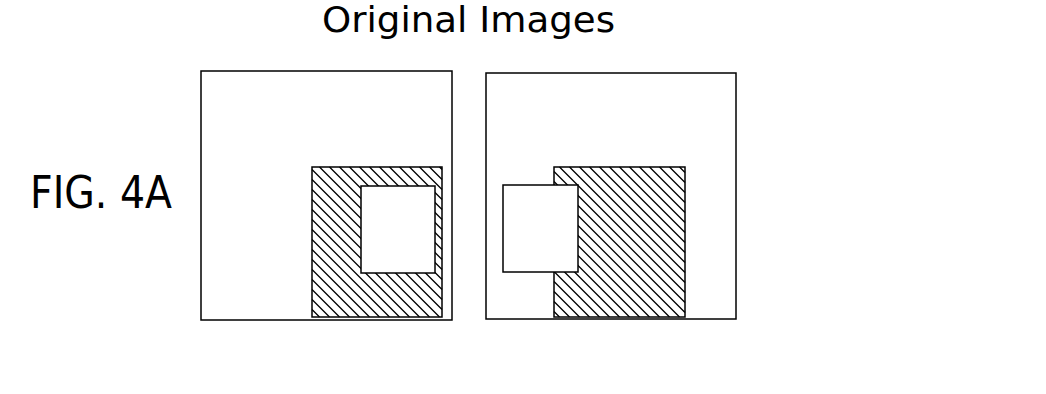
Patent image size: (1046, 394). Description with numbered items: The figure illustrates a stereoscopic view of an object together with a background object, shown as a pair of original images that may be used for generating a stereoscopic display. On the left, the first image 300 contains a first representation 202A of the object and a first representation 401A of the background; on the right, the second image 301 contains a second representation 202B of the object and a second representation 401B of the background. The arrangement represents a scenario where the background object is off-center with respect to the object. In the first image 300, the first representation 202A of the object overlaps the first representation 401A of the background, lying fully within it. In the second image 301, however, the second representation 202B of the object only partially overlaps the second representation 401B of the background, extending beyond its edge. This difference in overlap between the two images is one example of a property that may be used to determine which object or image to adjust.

The first image 300 is at (252, 100).
The second image 301 is at (718, 100).
The first representation of a background 401A is at (320, 166).
The first representation of the second object 202A is at (389, 198).
The second representation of the background 401B is at (667, 304).
The second representation of the second object 202B is at (530, 273).